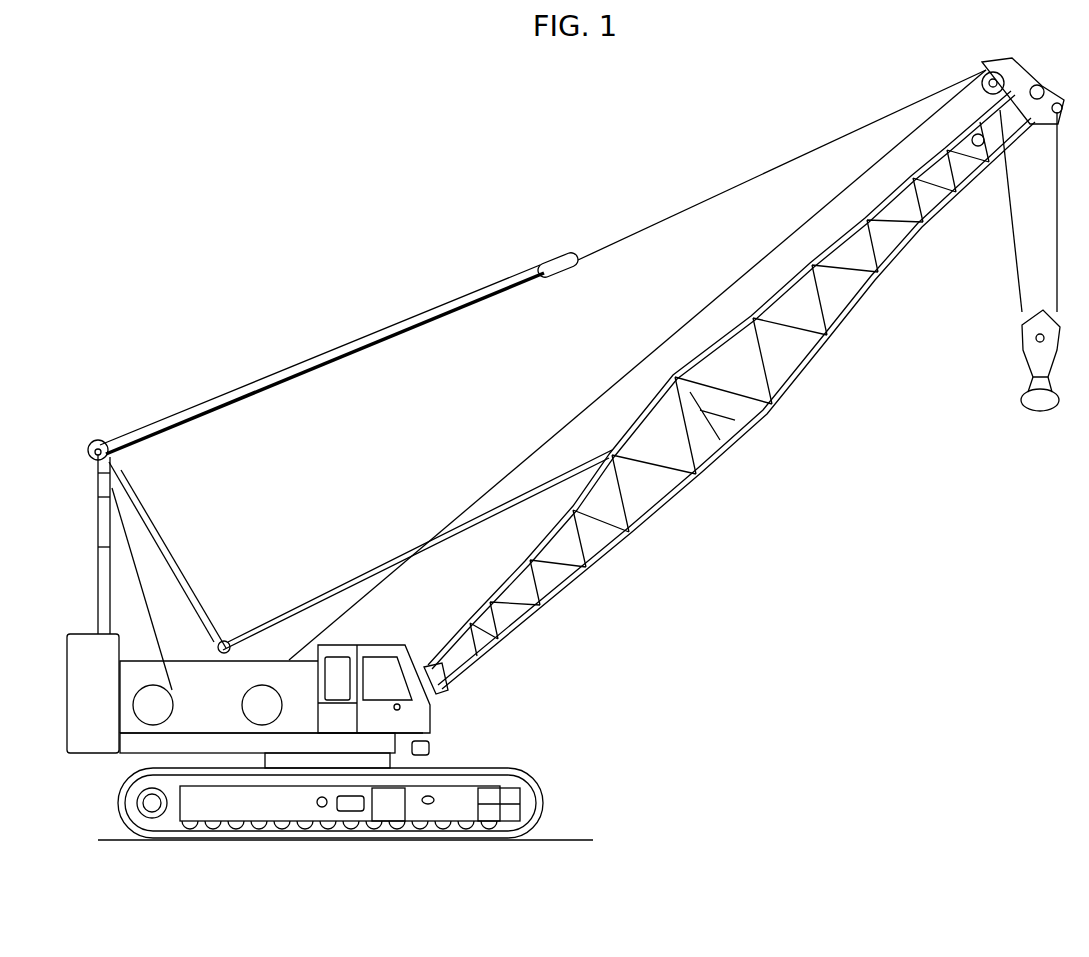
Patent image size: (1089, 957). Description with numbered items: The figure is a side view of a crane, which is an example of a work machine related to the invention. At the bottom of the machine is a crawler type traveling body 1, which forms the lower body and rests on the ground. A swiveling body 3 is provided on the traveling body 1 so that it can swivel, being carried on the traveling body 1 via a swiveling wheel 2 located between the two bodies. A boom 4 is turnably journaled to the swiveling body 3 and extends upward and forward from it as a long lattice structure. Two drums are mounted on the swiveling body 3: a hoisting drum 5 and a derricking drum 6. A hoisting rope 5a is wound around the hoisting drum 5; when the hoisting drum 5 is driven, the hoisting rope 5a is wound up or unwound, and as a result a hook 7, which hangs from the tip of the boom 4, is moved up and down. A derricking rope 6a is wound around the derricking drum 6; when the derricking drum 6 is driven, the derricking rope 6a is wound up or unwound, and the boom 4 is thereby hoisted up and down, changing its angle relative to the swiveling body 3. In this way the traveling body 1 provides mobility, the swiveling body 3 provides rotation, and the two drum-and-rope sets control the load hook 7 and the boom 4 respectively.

The crawler type traveling body 1 is at (308, 812).
The swiveling wheel 2 is at (297, 755).
The swiveling body 3 is at (233, 688).
The boom 4 is at (727, 457).
The hoisting drum 5 is at (257, 722).
The hoisting rope 5a is at (613, 383).
The derricking drum 6 is at (122, 745).
The derricking rope 6a is at (321, 350).
The hook 7 is at (1047, 418).